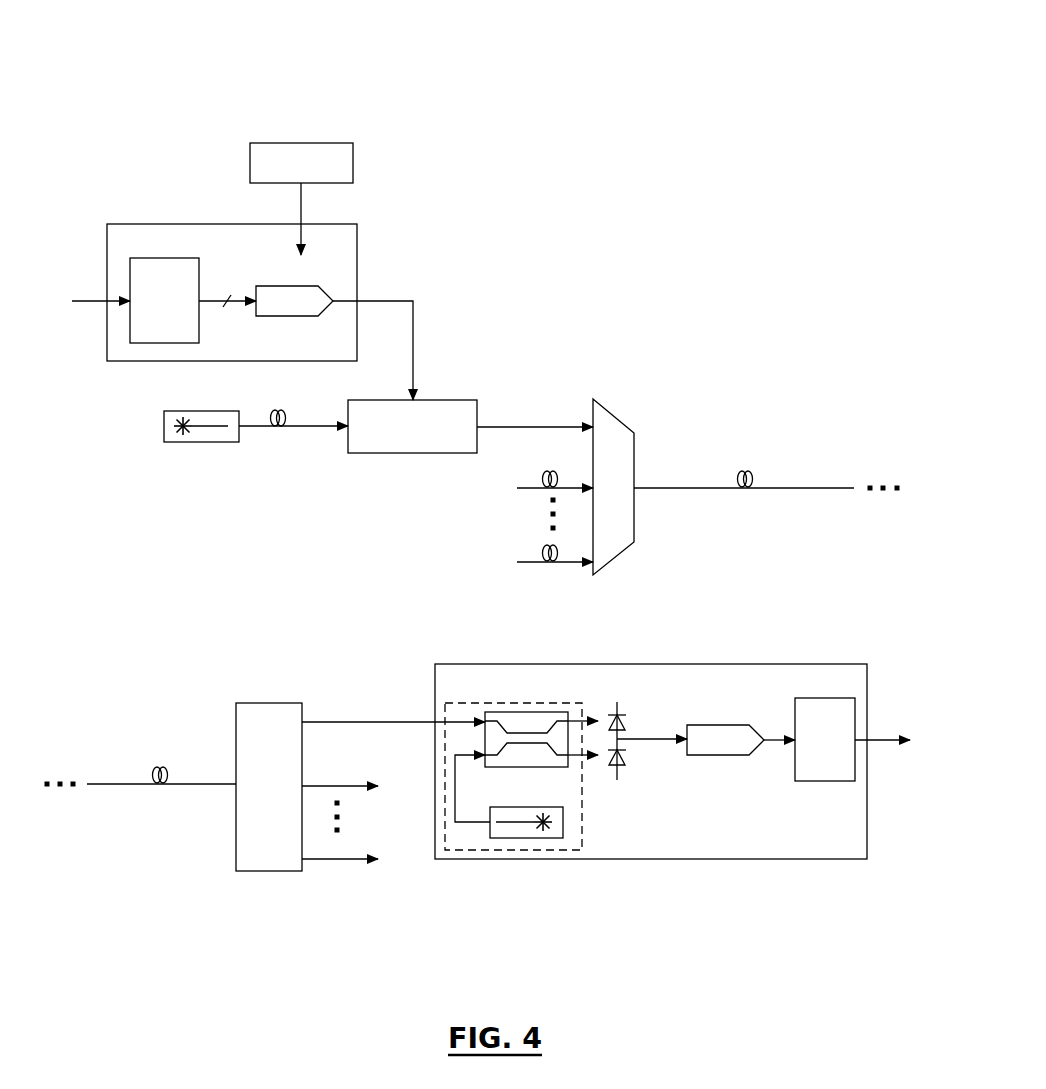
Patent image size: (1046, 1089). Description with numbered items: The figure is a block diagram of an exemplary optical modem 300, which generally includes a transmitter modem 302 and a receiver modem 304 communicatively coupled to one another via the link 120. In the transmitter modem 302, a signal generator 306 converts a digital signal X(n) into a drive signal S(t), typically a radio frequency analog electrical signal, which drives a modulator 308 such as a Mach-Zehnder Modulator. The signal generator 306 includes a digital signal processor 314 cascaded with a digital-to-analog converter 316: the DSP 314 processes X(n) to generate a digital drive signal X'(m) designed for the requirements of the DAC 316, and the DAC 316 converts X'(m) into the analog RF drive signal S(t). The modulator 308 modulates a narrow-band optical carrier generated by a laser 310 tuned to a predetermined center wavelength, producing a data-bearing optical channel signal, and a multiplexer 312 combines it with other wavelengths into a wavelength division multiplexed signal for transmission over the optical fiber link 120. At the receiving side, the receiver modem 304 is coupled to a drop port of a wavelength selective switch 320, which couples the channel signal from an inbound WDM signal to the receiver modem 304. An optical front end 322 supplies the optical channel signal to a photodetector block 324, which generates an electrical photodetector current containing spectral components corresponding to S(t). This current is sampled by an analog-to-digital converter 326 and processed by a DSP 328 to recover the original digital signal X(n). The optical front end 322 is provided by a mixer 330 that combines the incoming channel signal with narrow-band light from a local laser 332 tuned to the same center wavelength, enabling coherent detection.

The optical modem 300 is at (567, 76).
The transmitter modem 302 is at (416, 175).
The receiver modem 304 is at (775, 664).
The signal generator 306 is at (203, 224).
The modulator 308 is at (448, 400).
The laser 310 is at (210, 411).
The multiplexer 312 is at (620, 421).
The digital signal processor 314 is at (170, 258).
The digital-to-analog converter 316 is at (295, 286).
The link 120 is at (782, 488).
The wavelength selective switch 320 is at (273, 703).
The optical front end 322 is at (512, 703).
The photodetector block 324 is at (617, 705).
The analog-to-digital converter 326 is at (718, 725).
The digital signal processor 328 is at (822, 781).
The mixer 330 is at (490, 767).
The local laser 332 is at (530, 807).